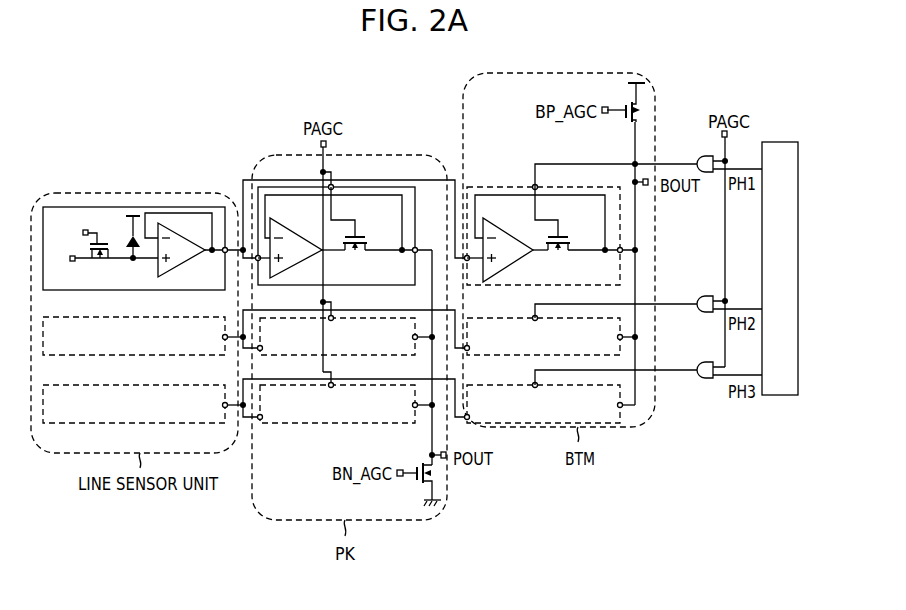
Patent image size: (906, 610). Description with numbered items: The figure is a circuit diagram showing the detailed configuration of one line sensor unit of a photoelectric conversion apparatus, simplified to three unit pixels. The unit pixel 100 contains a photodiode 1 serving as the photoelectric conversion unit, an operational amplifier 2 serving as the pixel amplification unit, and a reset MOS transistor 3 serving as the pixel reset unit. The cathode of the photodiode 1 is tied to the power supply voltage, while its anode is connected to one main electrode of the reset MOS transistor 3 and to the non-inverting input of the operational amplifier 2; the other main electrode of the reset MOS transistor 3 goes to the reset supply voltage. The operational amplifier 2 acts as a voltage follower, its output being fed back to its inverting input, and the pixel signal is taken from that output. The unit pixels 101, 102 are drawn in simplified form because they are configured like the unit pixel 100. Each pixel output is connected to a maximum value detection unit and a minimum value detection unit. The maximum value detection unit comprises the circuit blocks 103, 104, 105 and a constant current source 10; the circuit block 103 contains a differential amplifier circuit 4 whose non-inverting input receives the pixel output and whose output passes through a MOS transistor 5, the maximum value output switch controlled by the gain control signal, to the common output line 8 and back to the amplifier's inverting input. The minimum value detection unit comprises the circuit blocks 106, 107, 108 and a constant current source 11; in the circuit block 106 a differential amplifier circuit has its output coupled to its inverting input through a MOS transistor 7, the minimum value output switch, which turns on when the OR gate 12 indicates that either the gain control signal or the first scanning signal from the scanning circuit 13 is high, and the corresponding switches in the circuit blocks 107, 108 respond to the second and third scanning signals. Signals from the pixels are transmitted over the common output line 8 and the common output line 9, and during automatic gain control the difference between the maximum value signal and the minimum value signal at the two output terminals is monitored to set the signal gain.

The photodiode 1 is at (127, 239).
The operational amplifier 2 is at (183, 262).
The reset MOS transistor 3 is at (104, 261).
The differential amplifier circuit 4 is at (290, 228).
The MOS transistor 5 is at (364, 256).
The MOS transistor 7 is at (568, 256).
The common output line 8 is at (433, 297).
The common output line 9 is at (638, 270).
The constant current source 10 is at (445, 485).
The constant current source 11 is at (643, 104).
The OR gate 12 is at (700, 156).
The scanning circuit 13 is at (778, 142).
The unit pixel 100 is at (186, 290).
The unit pixel 101 is at (186, 357).
The unit pixel 102 is at (186, 425).
The circuit block 103 is at (343, 287).
The circuit block 104 is at (276, 357).
The circuit block 105 is at (276, 425).
The circuit block 106 is at (491, 287).
The circuit block 107 is at (491, 357).
The circuit block 108 is at (618, 415).